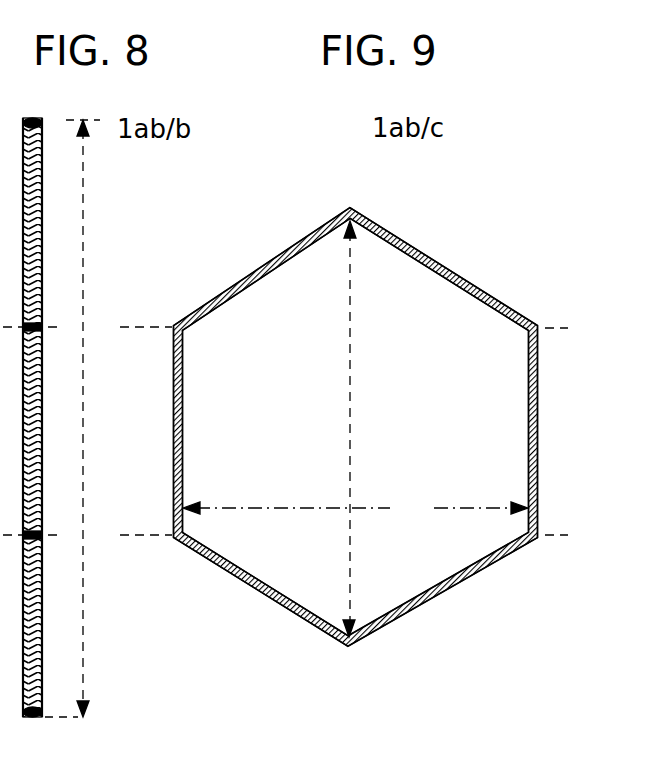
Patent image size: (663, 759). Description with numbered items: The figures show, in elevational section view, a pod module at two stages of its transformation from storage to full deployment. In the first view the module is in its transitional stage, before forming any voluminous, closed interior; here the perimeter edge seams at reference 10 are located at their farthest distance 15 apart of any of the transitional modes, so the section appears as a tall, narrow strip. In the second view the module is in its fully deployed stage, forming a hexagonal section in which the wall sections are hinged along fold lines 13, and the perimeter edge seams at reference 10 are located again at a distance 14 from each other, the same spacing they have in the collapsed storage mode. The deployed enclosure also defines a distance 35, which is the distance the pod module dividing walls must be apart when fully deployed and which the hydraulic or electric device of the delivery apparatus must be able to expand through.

In FIG. 8, the reference location of perimeter edge seams 10 is at (53, 118).
In FIG. 9, the reference location of perimeter edge seams 10 is at (356, 426).
In FIG. 9, the fold lines 13 is at (530, 330).
In FIG. 9, the distance between perimeter edge seams 14 is at (356, 429).
In FIG. 8, the farthest distance between perimeter edge seams 15 is at (89, 418).
In FIG. 9, the distance between dividing walls 35 is at (355, 511).